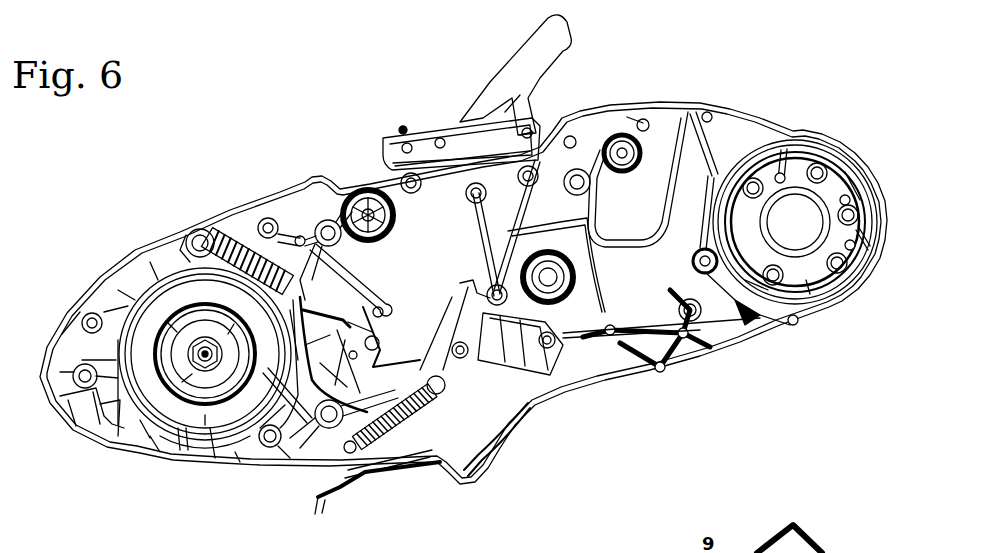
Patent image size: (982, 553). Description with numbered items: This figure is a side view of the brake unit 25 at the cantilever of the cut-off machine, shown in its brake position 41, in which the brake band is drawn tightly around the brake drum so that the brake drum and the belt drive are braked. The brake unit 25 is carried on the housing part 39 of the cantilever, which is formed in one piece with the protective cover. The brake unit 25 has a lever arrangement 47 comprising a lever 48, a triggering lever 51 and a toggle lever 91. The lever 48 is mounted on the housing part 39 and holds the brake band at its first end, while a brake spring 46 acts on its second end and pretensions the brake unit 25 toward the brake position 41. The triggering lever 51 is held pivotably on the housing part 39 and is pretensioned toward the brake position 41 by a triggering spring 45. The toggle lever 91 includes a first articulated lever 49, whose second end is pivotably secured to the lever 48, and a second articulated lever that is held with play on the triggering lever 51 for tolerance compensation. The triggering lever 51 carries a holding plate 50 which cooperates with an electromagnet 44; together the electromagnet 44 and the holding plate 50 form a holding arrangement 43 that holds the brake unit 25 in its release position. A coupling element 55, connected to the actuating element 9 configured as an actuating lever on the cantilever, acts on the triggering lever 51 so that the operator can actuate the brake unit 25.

The brake unit 25 is at (130, 246).
The actuating element 9 is at (524, 68).
The coupling element 55 is at (507, 228).
The toggle lever 91 is at (310, 218).
The lever arrangement 47 is at (362, 298).
The brake spring 46 is at (243, 247).
The brake position 41 is at (208, 452).
The triggering lever 51 is at (310, 372).
The first articulated lever 49 is at (326, 425).
The triggering spring 45 is at (383, 403).
The lever 48 is at (433, 463).
The holding plate 50 is at (458, 447).
The holding arrangement 43 is at (553, 381).
The electromagnet 44 is at (510, 347).
The housing part 39 is at (748, 328).